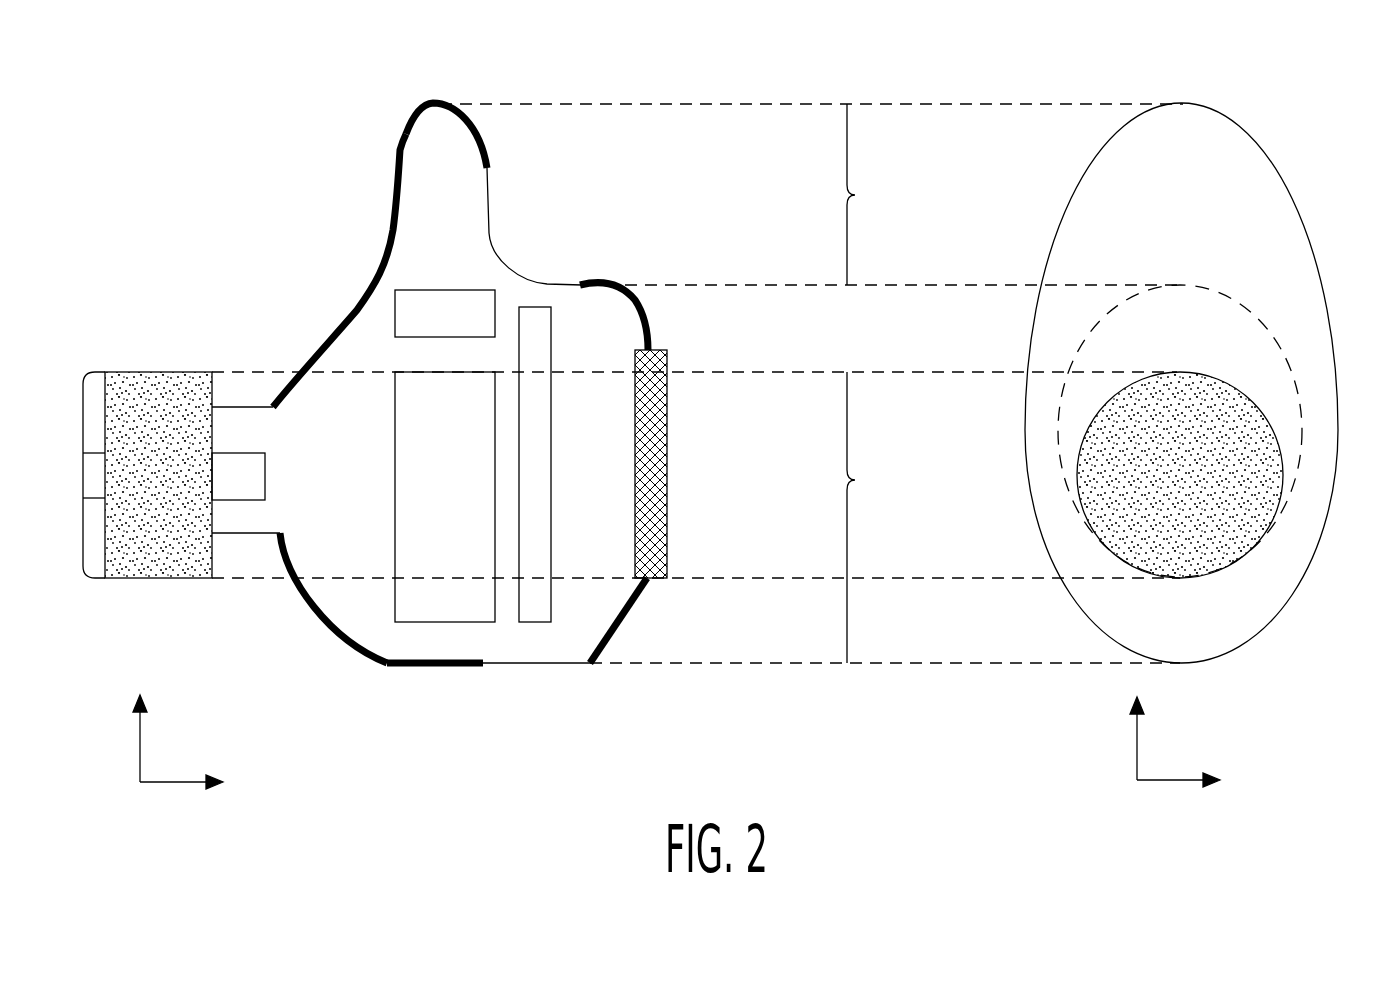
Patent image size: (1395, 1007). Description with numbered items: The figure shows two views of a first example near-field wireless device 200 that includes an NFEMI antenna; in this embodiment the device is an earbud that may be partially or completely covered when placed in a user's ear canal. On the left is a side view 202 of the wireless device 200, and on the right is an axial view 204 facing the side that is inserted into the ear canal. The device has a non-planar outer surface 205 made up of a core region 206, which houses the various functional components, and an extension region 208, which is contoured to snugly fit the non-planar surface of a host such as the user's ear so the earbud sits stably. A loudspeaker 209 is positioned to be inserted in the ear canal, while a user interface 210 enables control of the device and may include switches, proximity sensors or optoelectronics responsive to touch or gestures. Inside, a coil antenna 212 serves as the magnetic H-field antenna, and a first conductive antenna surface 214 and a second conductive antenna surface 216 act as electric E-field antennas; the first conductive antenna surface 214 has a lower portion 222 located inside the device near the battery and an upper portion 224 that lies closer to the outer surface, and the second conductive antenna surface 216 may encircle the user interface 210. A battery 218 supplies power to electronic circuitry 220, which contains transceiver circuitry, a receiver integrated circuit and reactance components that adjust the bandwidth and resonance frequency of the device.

The near-field wireless device 200 is at (138, 104).
The side view 202 is at (140, 745).
The axial view 204 is at (1137, 743).
The non-planar outer surface 205 is at (493, 240).
The core region 206 is at (1362, 267).
The extension region 208 is at (876, 194).
The loudspeaker 209 is at (147, 372).
The user interface 210 is at (668, 442).
The coil antenna 212 is at (447, 290).
The first conductive antenna surface 214 is at (357, 310).
The second conductive antenna surface 216 is at (613, 282).
The battery 218 is at (467, 503).
The electronic circuitry 220 is at (552, 437).
The lower portion 222 is at (443, 667).
The upper portion 224 is at (432, 103).